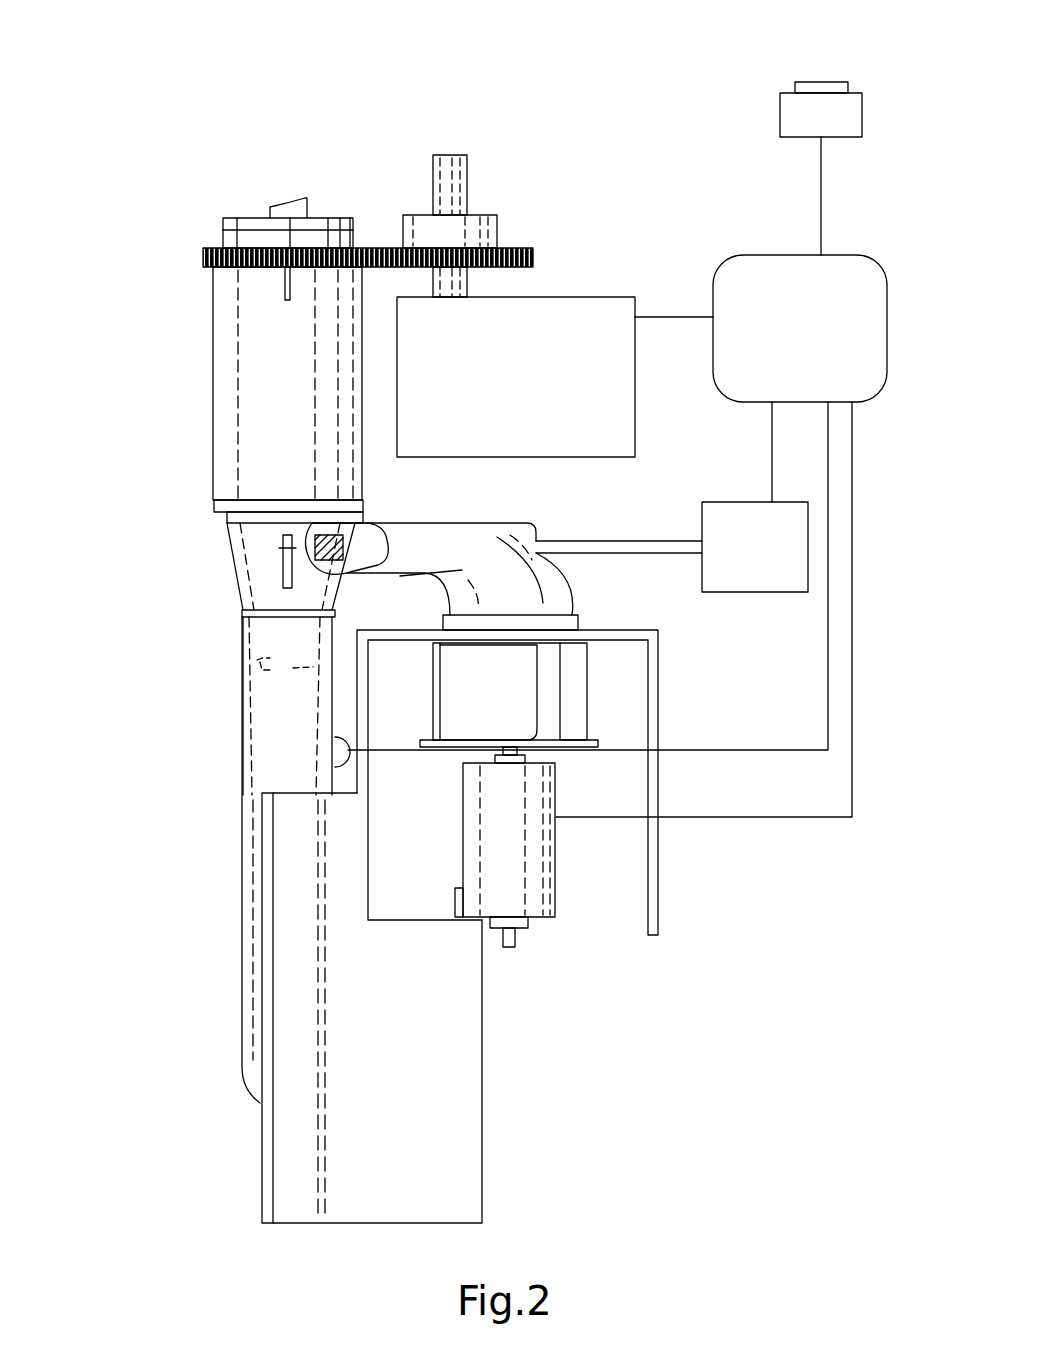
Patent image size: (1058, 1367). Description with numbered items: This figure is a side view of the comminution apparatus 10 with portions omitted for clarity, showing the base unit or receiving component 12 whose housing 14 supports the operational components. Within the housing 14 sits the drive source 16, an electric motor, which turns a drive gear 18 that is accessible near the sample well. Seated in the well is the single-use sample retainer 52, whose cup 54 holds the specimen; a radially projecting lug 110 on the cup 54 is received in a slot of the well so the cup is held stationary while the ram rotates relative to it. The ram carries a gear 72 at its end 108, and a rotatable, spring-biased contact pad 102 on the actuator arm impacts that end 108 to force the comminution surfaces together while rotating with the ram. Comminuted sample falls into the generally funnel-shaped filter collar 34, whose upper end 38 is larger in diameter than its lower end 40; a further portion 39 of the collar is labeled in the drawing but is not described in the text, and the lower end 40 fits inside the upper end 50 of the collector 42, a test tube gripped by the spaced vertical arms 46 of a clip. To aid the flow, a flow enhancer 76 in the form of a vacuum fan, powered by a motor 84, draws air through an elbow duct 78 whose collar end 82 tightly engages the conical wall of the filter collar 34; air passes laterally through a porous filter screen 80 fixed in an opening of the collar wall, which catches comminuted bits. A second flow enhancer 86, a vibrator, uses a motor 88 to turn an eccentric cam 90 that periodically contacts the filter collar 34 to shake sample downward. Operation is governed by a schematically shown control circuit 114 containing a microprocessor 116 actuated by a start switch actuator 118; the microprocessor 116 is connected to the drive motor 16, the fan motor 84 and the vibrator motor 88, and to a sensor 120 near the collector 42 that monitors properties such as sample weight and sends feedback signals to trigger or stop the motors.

The apparatus 10 is at (105, 145).
The receiving component 12 is at (737, 100).
The housing 14 is at (435, 1083).
The drive source 16 is at (555, 377).
The drive gear 18 is at (523, 248).
The filter collar 34 is at (250, 583).
The upper end 38 is at (227, 530).
The funnel rim 39 is at (227, 520).
The lower end 40 is at (265, 660).
The collector 42 is at (243, 930).
The arms 46 is at (265, 1182).
The upper end 50 is at (240, 610).
The sample retainer 52 is at (197, 313).
The cup 54 is at (288, 395).
The gear 72 is at (203, 258).
The flow enhancer 76 is at (575, 668).
The elbow duct 78 is at (483, 525).
The filter screen 80 is at (350, 545).
The collar end 82 is at (325, 590).
The motor 84 is at (505, 855).
The second flow enhancer 86 is at (655, 540).
The motor 88 is at (755, 547).
The eccentric cam 90 is at (283, 568).
The contact pad 102 is at (223, 240).
The end 108 is at (358, 250).
The lug 110 is at (287, 292).
The control circuit 114 is at (690, 282).
The microprocessor 116 is at (617, 536).
The actuator 118 is at (842, 120).
The sensor 120 is at (348, 762).